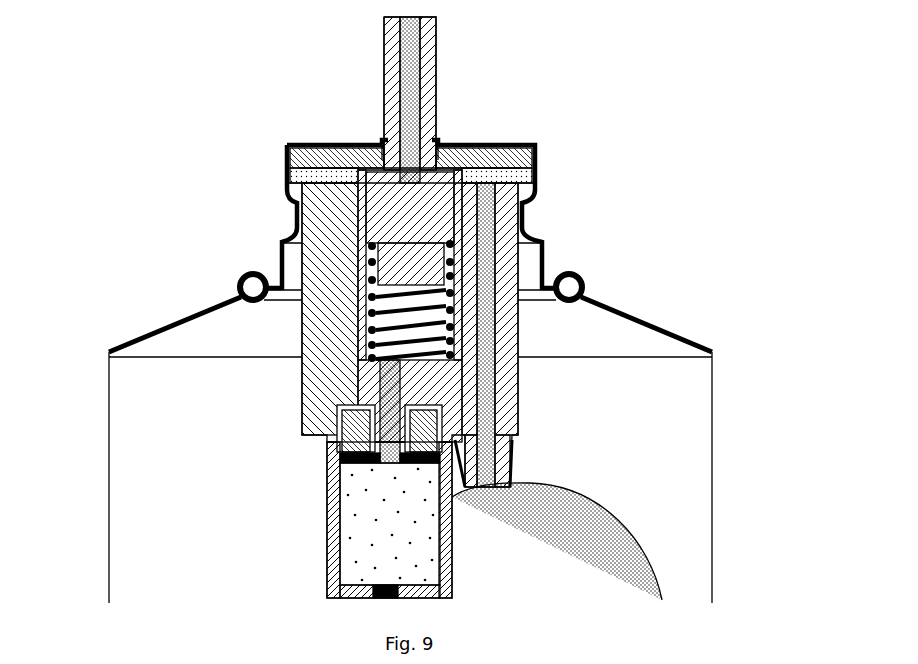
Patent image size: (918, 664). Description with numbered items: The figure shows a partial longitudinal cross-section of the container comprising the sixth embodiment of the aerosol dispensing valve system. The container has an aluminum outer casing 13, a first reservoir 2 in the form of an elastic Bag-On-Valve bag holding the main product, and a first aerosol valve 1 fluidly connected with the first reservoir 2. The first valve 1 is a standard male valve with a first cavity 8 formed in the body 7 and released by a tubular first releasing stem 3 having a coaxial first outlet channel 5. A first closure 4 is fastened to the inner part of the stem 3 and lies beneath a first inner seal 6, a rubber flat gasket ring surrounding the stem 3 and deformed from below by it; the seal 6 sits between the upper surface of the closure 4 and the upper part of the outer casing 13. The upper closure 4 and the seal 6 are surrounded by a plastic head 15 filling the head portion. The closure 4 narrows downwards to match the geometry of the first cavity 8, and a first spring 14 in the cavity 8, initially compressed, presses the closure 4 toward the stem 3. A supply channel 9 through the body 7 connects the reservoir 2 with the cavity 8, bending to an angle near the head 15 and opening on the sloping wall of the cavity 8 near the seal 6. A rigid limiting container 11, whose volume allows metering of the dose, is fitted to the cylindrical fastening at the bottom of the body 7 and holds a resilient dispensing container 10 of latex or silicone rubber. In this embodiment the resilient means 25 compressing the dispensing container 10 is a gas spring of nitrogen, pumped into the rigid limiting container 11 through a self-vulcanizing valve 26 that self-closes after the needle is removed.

The first aerosol valve 1 is at (286, 140).
The first reservoir 2 is at (575, 542).
The first releasing stem 3 is at (433, 73).
The first closure 4 is at (380, 195).
The first outlet channel 5 is at (414, 76).
The first inner seal 6 is at (463, 146).
The body 7 is at (327, 205).
The first cavity 8 is at (358, 237).
The supply channel 9 is at (486, 205).
The dispensing container 10 is at (345, 456).
The rigid limiting container 11 is at (330, 575).
The outer casing 13 is at (541, 258).
The first spring 14 is at (368, 327).
The head 15 is at (537, 150).
The resilient means 25 is at (372, 528).
The self-vulcanizing valve 26 is at (375, 594).